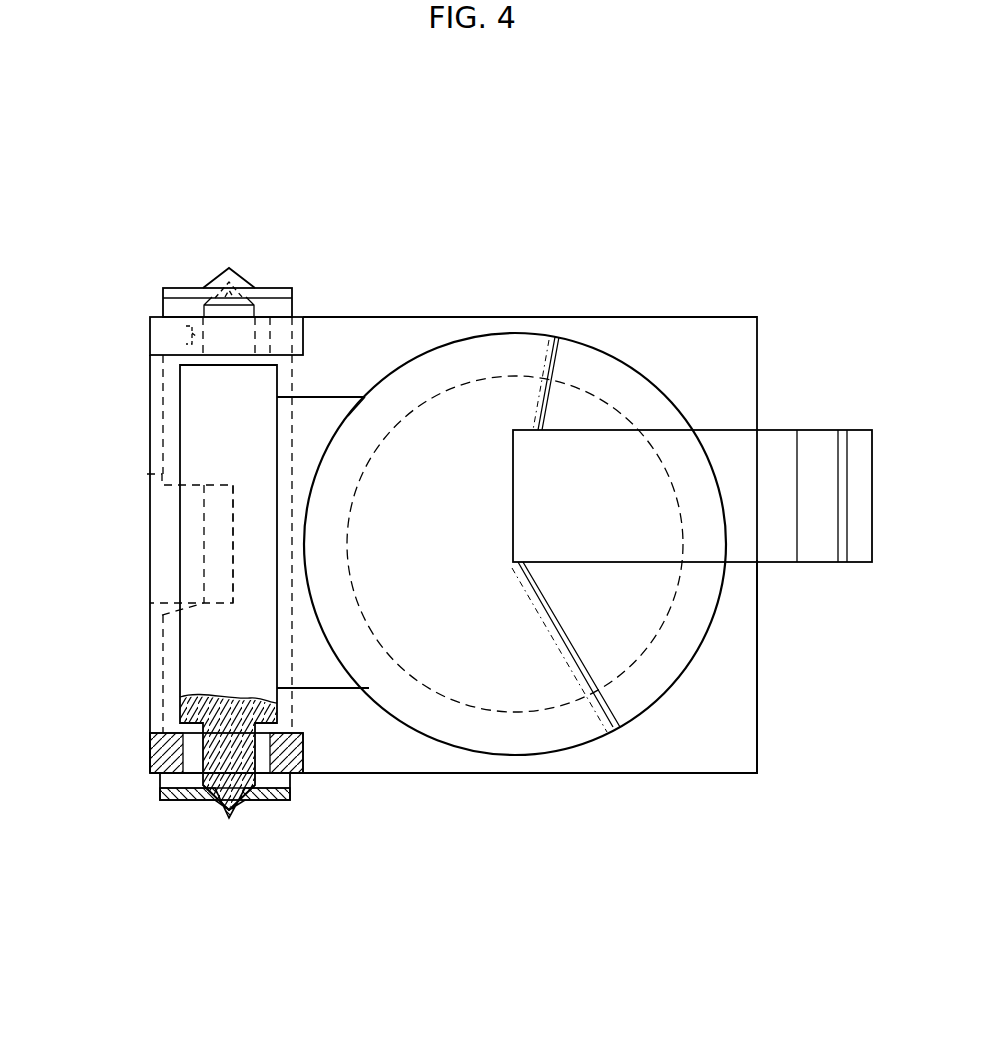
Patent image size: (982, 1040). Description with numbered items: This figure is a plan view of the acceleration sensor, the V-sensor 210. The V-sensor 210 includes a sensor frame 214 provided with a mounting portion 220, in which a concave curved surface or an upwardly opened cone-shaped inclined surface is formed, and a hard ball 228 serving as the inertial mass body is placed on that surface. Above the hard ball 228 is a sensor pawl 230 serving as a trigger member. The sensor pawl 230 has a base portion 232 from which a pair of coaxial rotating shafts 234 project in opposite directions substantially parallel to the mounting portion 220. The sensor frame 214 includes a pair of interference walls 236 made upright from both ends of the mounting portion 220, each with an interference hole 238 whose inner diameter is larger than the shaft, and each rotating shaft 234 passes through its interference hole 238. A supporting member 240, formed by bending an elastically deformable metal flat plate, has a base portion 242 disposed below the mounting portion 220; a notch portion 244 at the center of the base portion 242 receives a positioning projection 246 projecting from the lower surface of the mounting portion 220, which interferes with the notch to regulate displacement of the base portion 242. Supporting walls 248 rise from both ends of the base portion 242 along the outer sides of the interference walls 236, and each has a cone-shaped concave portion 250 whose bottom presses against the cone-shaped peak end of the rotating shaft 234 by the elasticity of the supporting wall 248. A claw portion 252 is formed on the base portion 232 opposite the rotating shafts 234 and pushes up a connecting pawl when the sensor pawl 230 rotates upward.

The V-sensor 210 is at (662, 190).
The sensor frame 214 is at (770, 702).
The mounting portion 220 is at (703, 750).
The hard ball 228 is at (547, 712).
The sensor pawl 230 is at (655, 347).
The base portion 232 is at (358, 422).
The rotating shafts 234 is at (200, 360).
The interference walls 236 is at (163, 370).
The interference hole 238 is at (183, 328).
The supporting member 240 is at (307, 808).
The base portion 242 is at (290, 782).
The notch portion 244 is at (205, 513).
The positioning projection 246 is at (147, 474).
The supporting walls 248 is at (165, 298).
The concave portion 250 is at (257, 300).
The claw portion 252 is at (815, 437).